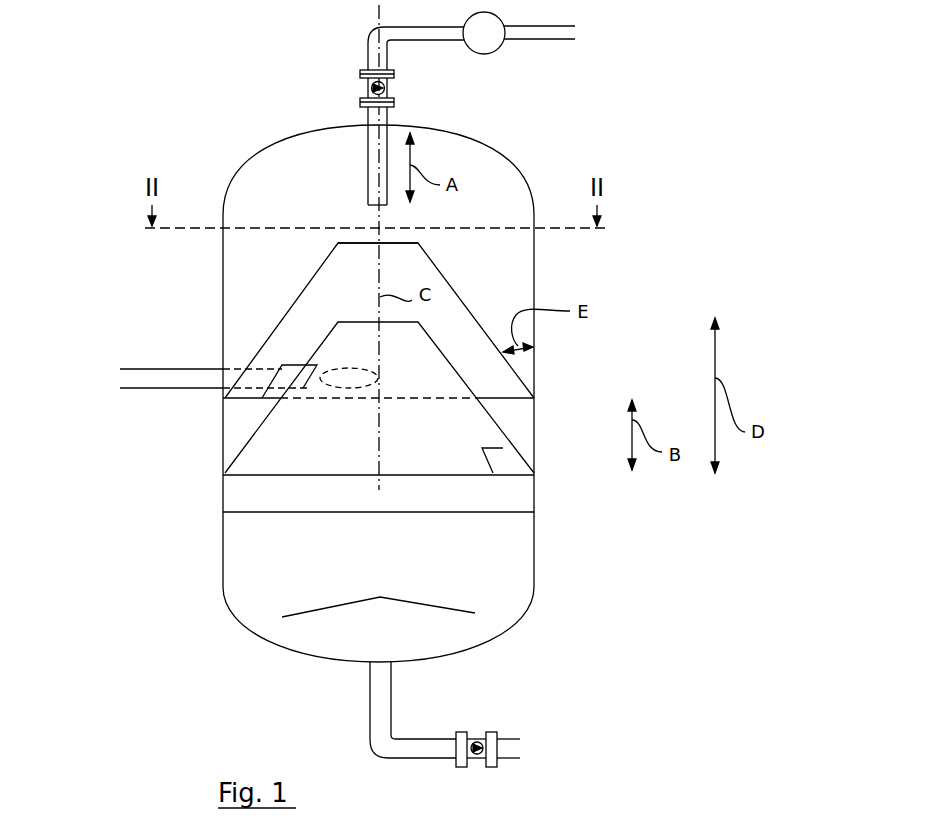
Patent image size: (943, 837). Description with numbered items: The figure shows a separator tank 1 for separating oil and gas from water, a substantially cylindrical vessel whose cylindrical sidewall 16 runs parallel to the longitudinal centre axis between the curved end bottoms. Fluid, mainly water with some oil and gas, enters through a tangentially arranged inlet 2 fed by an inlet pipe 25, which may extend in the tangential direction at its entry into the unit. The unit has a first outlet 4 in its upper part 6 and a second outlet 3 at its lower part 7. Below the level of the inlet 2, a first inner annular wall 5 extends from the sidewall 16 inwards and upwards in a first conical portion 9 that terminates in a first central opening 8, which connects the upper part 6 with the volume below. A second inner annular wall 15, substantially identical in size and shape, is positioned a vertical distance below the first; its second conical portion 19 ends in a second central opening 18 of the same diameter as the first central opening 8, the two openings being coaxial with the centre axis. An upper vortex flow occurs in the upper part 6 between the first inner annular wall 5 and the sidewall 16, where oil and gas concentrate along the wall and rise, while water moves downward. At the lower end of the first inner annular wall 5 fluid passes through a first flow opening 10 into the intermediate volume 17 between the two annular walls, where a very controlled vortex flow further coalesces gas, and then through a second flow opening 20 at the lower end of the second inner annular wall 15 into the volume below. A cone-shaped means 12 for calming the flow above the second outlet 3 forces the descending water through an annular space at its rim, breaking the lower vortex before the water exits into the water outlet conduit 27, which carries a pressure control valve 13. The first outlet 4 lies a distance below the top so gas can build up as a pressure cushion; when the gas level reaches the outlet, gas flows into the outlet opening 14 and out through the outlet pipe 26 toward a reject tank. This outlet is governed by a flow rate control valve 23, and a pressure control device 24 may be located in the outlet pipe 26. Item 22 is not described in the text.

The separator tank 1 is at (500, 132).
The inlet 2 is at (322, 385).
The second outlet 3 is at (392, 693).
The first outlet 4 is at (372, 160).
The first inner annular wall 5 is at (344, 307).
The upper part 6 is at (260, 170).
The lower part 7 is at (258, 567).
The first central opening 8 is at (402, 243).
The first conical portion 9 is at (302, 322).
The first flow opening 10 is at (268, 392).
The means for calming the flow 12 is at (337, 600).
The pressure control valve 13 is at (490, 732).
The outlet opening 14 is at (376, 207).
The second inner annular wall 15 is at (424, 455).
The cylindrical sidewall 16 is at (223, 500).
The intermediate volume 17 is at (497, 368).
The second central opening 18 is at (352, 318).
The second conical portion 19 is at (325, 462).
The second flow opening 20 is at (497, 457).
The lower edge of band 22 is at (518, 513).
The flow rate control valve 23 is at (365, 88).
The pressure control device 24 is at (505, 50).
The inlet pipe 25 is at (138, 382).
The outlet pipe 26 is at (572, 31).
The water outlet conduit 27 is at (518, 750).